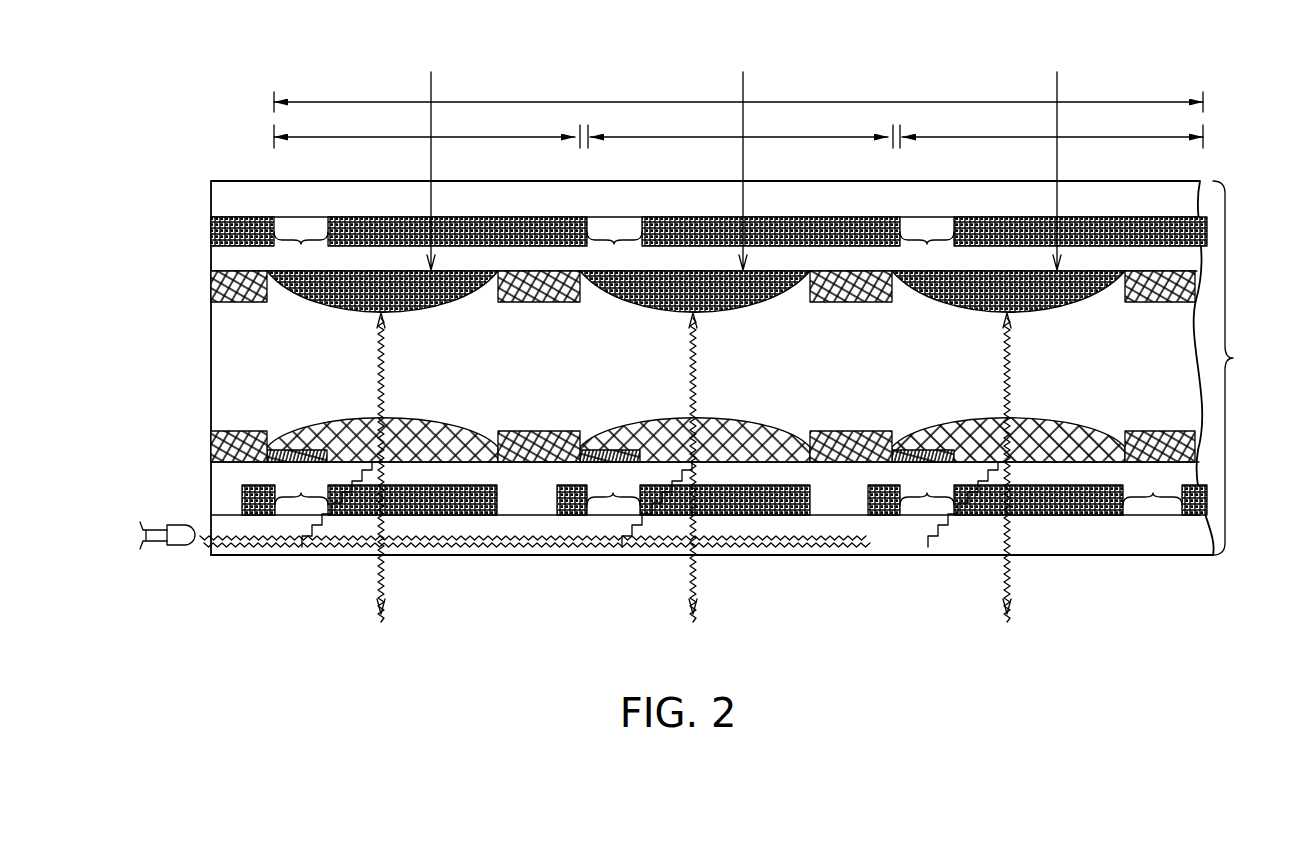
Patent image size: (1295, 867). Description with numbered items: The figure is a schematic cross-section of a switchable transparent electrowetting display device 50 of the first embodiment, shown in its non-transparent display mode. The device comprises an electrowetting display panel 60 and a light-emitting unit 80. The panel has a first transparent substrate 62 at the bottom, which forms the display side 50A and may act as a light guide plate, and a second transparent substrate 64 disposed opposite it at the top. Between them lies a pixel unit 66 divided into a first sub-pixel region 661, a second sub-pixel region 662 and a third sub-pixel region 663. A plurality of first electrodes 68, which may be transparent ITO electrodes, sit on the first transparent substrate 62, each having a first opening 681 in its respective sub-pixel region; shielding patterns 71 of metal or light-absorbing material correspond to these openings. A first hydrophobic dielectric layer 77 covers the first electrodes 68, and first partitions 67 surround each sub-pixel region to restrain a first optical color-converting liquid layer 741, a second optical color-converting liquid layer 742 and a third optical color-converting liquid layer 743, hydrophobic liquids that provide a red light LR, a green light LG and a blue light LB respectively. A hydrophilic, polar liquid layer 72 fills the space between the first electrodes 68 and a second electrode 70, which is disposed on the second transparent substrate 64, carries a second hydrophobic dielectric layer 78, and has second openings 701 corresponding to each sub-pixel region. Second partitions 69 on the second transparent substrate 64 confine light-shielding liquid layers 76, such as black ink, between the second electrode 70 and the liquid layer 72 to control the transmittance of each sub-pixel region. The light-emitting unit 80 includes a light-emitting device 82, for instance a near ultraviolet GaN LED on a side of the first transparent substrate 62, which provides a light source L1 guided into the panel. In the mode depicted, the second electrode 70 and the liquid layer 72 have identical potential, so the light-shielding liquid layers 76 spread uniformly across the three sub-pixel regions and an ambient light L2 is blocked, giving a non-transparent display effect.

The switchable transparent electrowetting display device 50 is at (222, 104).
The display side 50A is at (540, 557).
The electrowetting display panel 60 is at (1243, 368).
The first transparent substrate 62 is at (713, 543).
The second transparent substrate 64 is at (692, 208).
The pixel unit 66 is at (738, 96).
The first sub-pixel region 661 is at (431, 131).
The second sub-pixel region 662 is at (745, 131).
The third sub-pixel region 663 is at (1052, 131).
The first partition 67 is at (224, 460).
The first electrode 68 is at (398, 511).
The first opening 681 is at (728, 485).
The second partition 69 is at (220, 300).
The second electrode 70 is at (225, 243).
The second opening 701 is at (614, 251).
The shielding pattern 71 is at (297, 448).
The liquid layer 72 is at (221, 369).
The first optical color-converting liquid layer 741 is at (400, 451).
The second optical color-converting liquid layer 742 is at (713, 451).
The third optical color-converting liquid layer 743 is at (1026, 451).
The light-shielding liquid layer 76 is at (368, 304).
The first hydrophobic dielectric layer 77 is at (231, 503).
The second hydrophobic dielectric layer 78 is at (221, 260).
The light-emitting unit 80 is at (158, 502).
The light-emitting device 82 is at (178, 547).
The light source L1 is at (246, 551).
The ambient light L2 is at (433, 80).
The red light LR is at (384, 356).
The green light LG is at (696, 356).
The blue light LB is at (1010, 356).